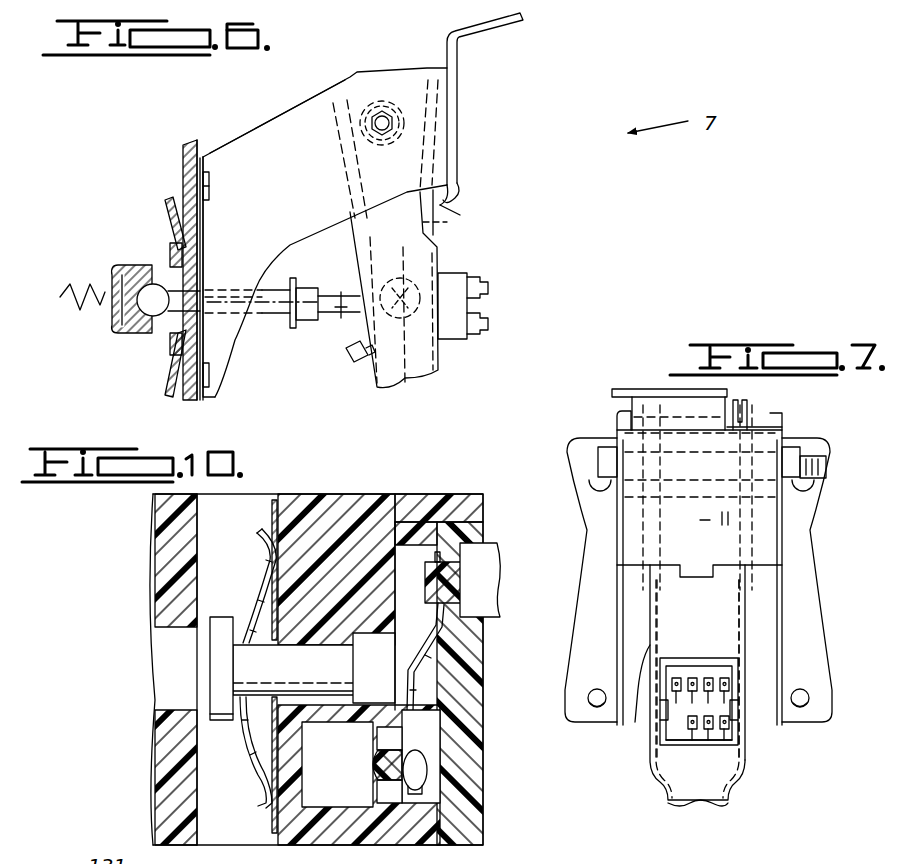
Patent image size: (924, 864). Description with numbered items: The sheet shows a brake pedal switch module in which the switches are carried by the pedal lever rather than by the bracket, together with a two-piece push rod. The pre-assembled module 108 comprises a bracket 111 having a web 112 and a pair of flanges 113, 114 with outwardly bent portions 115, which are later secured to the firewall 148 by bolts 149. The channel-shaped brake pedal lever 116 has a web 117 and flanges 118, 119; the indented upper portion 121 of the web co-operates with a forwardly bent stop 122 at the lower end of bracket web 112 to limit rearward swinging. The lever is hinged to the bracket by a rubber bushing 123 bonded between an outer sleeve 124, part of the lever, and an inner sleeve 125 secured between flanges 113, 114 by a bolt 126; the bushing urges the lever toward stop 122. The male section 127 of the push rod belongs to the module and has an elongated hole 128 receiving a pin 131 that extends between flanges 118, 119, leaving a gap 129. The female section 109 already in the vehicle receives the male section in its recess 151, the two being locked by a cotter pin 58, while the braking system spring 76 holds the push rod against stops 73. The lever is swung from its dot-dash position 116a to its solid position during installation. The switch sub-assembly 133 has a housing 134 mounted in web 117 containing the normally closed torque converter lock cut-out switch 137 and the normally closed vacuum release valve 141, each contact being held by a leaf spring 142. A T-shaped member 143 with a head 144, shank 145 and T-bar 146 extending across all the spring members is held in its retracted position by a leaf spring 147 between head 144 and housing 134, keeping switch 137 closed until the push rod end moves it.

In FIG. 6, the cotter pin 58 is at (292, 330).
In FIG. 6, the stop 73 is at (160, 330).
In FIG. 6, the braking system spring 76 is at (72, 290).
In FIG. 6, the module 108 is at (455, 237).
In FIG. 6, the female section of the push rod 109 is at (268, 320).
In FIG. 6, the bracket 111 is at (305, 112).
In FIG. 6, the web 112 is at (458, 88).
In FIG. 6, the flange 113 is at (265, 142).
In FIG. 7, the flange 113 is at (620, 412).
In FIG. 7, the flange 114 is at (786, 418).
In FIG. 6, the outwardly bent portions 115 is at (205, 214).
In FIG. 7, the outwardly bent portions 115 is at (595, 536).
In FIG. 6, the brake pedal lever 116 is at (447, 357).
In FIG. 6, the dot-dash line position of the pedal lever 116a is at (522, 206).
In FIG. 6, the web 117 is at (432, 252).
In FIG. 7, the web 117 is at (715, 645).
In FIG. 7, the flange 118 is at (640, 722).
In FIG. 7, the flange 119 is at (752, 630).
In FIG. 6, the upper portion of web 121 is at (455, 213).
In FIG. 6, the forwardly bent stop 122 is at (462, 198).
In FIG. 7, the rubber bushing 123 is at (647, 382).
In FIG. 7, the outer sleeve 124 is at (802, 507).
In FIG. 7, the inner sleeve 125 is at (750, 401).
In FIG. 7, the bolt 126 is at (600, 465).
In FIG. 6, the male section of the push rod 127 is at (327, 318).
In FIG. 6, the elongated hole 128 is at (399, 272).
In FIG. 6, the gap 129 is at (356, 364).
In FIG. 6, the pin 131 is at (394, 291).
In FIG. 6, the switch sub-assembly 133 is at (475, 303).
In FIG. 7, the switch sub-assembly 133 is at (598, 863).
In FIG. 10, the housing 134 is at (376, 514).
In FIG. 10, the torque converter lock cut-out switch 137 is at (422, 780).
In FIG. 7, the cruise control vacuum release valve 141 is at (705, 761).
In FIG. 10, the leaf spring 142 is at (417, 708).
In FIG. 10, the T-shaped member 143 is at (262, 702).
In FIG. 10, the head 144 is at (221, 623).
In FIG. 10, the shank 145 is at (300, 660).
In FIG. 10, the T-bar 146 is at (385, 660).
In FIG. 10, the leaf spring 147 is at (252, 758).
In FIG. 6, the firewall 148 is at (192, 140).
In FIG. 6, the bolts 149 is at (208, 180).
In FIG. 6, the recess 151 is at (260, 264).